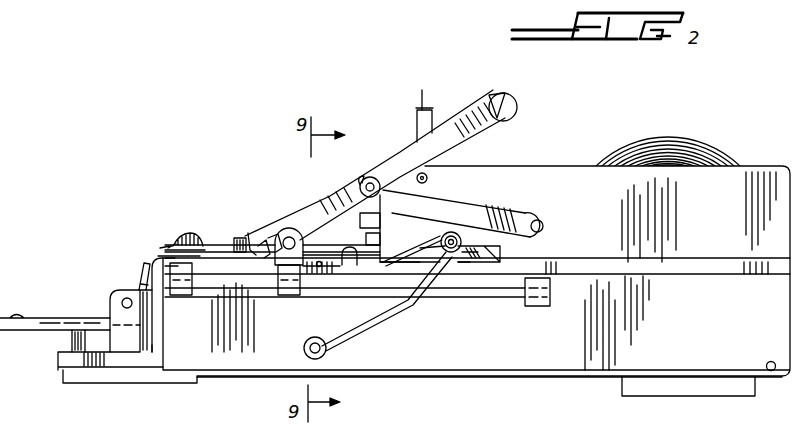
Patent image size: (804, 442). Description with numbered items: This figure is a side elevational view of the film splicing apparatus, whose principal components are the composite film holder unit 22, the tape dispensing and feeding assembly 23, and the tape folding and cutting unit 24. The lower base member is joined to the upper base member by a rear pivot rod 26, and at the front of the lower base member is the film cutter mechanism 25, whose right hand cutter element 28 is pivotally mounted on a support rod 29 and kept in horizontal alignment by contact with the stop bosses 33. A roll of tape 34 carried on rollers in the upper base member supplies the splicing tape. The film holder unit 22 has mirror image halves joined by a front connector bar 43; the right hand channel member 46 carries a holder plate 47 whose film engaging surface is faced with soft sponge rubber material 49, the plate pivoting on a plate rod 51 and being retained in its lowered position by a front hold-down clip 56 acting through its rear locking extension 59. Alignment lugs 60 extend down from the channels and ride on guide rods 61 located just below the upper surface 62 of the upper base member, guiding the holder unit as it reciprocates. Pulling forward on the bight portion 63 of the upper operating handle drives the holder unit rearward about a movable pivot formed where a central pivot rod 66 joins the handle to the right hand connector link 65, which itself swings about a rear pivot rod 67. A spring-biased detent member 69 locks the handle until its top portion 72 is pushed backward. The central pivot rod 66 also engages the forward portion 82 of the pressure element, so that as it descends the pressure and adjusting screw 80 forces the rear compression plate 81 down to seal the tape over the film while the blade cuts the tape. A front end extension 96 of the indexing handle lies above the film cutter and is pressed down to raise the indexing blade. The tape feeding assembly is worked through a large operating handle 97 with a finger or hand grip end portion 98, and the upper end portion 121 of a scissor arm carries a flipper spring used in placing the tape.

The composite film holder unit 22 is at (209, 228).
The tape dispensing and feeding assembly 23 is at (320, 232).
The tape folding and cutting unit 24 is at (419, 238).
The film cutter mechanism 25 is at (72, 305).
The rear pivot rod 26 is at (773, 372).
The right hand cutter element 28 is at (46, 333).
The support rod 29 is at (125, 297).
The stop bosses 33 is at (80, 343).
The roll of tape 34 is at (673, 138).
The front connector bar 43 is at (172, 246).
The right hand channel member 46 is at (243, 238).
The holder plate 47 is at (216, 244).
The sponge rubber material 49 is at (252, 273).
The plate rod 51 is at (288, 231).
The front hold-down clip 56 is at (160, 248).
The rear locking extension 59 is at (192, 236).
The alignment lugs 60 is at (185, 288).
The guide rods 61 is at (221, 292).
The upper surface 62 is at (319, 268).
The bight portion 63 is at (513, 99).
The right hand connector link 65 is at (505, 218).
The central pivot rod 66 is at (369, 177).
The rear pivot rod 67 is at (543, 228).
The detent member 69 is at (427, 121).
The top portion 72 is at (423, 89).
The pressure and adjusting screw 80 is at (466, 263).
The rear compression plate 81 is at (472, 266).
The forward portion 82 is at (374, 220).
The front end extension 96 is at (141, 266).
The operating handle 97 is at (392, 309).
The finger or hand grip end portion 98 is at (455, 233).
The upper end portion 121 is at (351, 251).